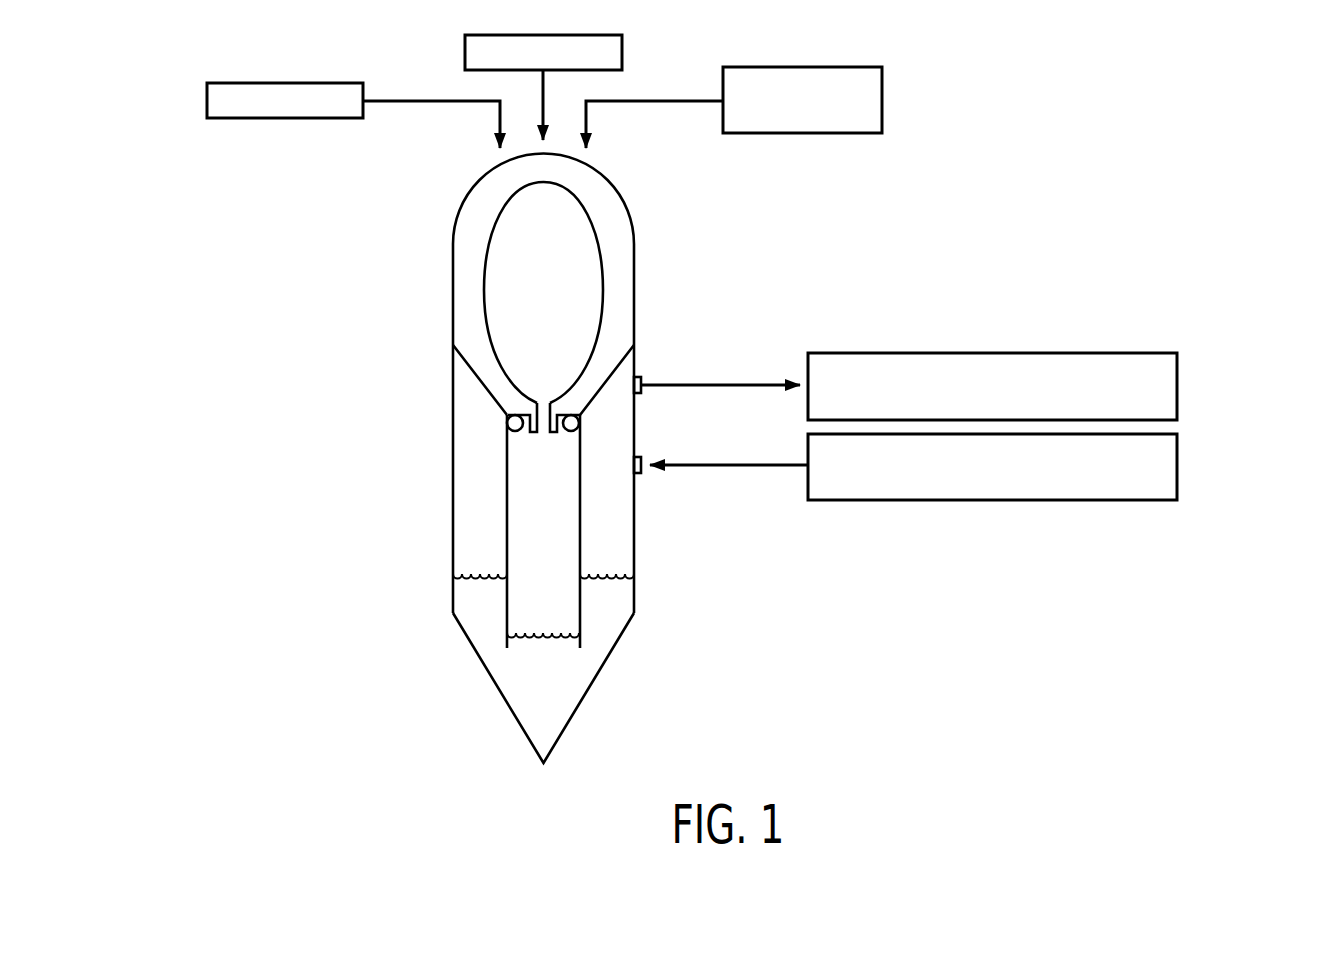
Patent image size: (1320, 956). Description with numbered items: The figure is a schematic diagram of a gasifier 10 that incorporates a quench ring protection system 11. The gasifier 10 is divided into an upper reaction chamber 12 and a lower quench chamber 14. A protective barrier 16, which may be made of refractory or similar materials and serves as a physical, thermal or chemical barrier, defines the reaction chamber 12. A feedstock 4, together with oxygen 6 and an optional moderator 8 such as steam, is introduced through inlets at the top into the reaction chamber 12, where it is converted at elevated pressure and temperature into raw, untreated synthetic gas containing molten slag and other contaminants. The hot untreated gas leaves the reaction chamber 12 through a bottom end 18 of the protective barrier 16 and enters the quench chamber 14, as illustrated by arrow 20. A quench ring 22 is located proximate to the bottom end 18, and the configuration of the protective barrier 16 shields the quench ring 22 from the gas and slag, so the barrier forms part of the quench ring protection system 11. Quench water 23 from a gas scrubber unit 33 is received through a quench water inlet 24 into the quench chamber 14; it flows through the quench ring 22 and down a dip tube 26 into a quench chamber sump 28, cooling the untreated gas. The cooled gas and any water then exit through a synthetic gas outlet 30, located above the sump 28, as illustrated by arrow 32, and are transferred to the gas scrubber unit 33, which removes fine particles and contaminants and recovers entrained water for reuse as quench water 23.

The feedstock 4 is at (465, 52).
The oxygen 6 is at (207, 100).
The optional moderator 8 is at (882, 106).
The gasifier 10 is at (576, 459).
The quench ring protection system 11 is at (490, 412).
The reaction chamber 12 is at (426, 236).
The quench chamber 14 is at (428, 563).
The protective barrier 16 is at (627, 226).
The bottom end 18 is at (498, 387).
The arrow 20 is at (543, 395).
The quench ring 22 is at (506, 425).
The quench water 23 is at (1177, 470).
The quench water inlet 24 is at (641, 473).
The dip tube 26 is at (580, 497).
The quench chamber sump 28 is at (555, 681).
The synthetic gas outlet 30 is at (641, 377).
The arrow 32 is at (619, 398).
The gas scrubber unit 33 is at (1177, 388).